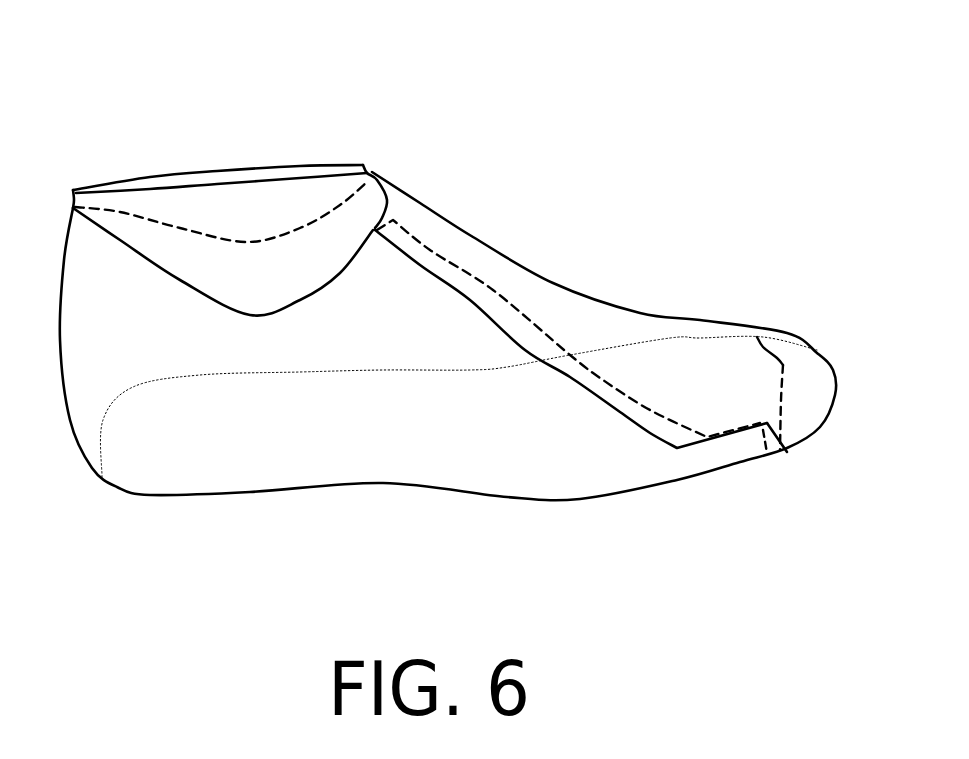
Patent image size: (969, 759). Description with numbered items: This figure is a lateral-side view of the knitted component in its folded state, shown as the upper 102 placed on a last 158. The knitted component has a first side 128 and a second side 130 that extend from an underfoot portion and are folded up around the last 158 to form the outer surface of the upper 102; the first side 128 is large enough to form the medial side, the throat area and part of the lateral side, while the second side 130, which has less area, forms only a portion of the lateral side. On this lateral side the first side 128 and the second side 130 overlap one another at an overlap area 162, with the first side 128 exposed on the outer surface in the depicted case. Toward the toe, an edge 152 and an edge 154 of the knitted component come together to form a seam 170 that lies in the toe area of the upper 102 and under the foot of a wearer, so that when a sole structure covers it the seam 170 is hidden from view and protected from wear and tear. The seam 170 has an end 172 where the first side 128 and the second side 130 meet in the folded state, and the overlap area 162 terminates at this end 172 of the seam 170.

The upper 102 is at (585, 117).
The first side 128 is at (545, 290).
The second side 130 is at (407, 327).
The edge 152 is at (783, 363).
The edge 154 is at (757, 337).
The last 158 is at (325, 160).
The overlap area 162 is at (613, 397).
The seam 170 is at (790, 400).
The end 172 is at (787, 452).